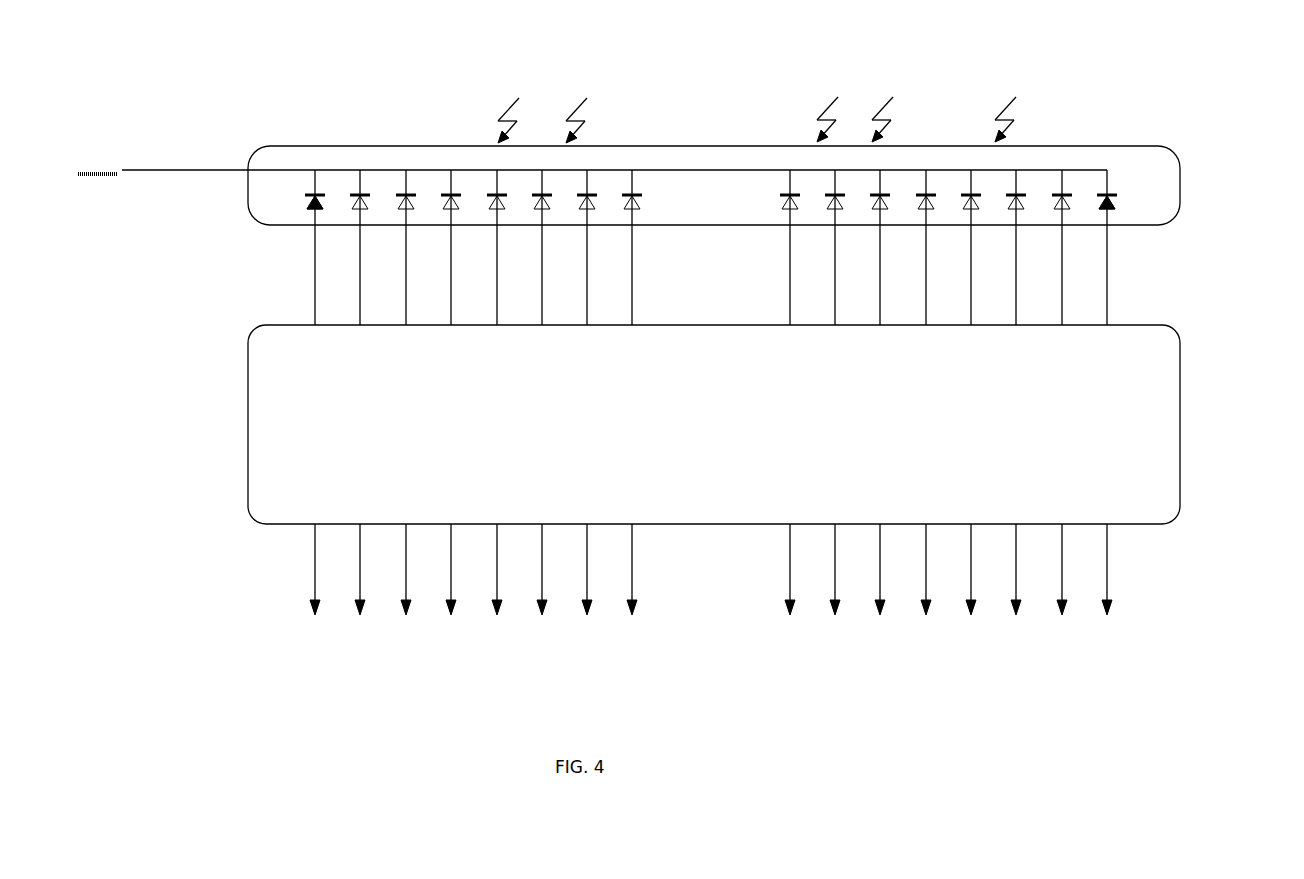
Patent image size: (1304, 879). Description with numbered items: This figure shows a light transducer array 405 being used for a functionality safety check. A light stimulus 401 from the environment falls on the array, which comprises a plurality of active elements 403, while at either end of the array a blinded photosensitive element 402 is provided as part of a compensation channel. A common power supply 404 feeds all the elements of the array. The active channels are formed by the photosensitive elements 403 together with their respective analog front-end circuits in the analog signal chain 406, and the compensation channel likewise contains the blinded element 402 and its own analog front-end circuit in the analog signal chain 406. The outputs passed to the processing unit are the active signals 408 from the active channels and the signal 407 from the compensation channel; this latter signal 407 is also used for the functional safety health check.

The light stimulus 401 is at (570, 110).
The photodiode 402 is at (311, 193).
The active elements 403 is at (404, 198).
The common power supply 404 is at (190, 168).
The photodiode array 405 is at (1183, 188).
The analog signal chain 406 is at (1182, 424).
The signal from the compensation channel 407 is at (312, 568).
The active signals 408 is at (405, 568).